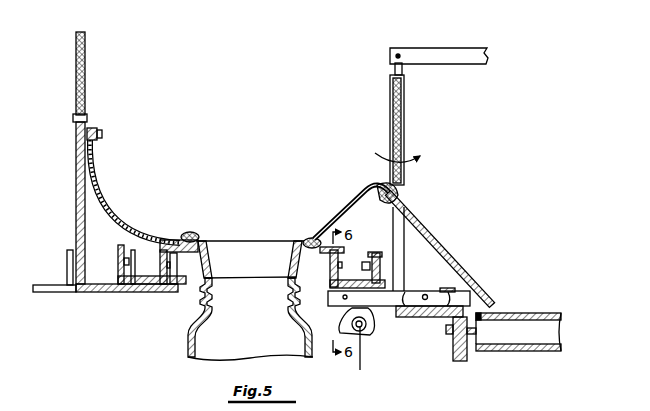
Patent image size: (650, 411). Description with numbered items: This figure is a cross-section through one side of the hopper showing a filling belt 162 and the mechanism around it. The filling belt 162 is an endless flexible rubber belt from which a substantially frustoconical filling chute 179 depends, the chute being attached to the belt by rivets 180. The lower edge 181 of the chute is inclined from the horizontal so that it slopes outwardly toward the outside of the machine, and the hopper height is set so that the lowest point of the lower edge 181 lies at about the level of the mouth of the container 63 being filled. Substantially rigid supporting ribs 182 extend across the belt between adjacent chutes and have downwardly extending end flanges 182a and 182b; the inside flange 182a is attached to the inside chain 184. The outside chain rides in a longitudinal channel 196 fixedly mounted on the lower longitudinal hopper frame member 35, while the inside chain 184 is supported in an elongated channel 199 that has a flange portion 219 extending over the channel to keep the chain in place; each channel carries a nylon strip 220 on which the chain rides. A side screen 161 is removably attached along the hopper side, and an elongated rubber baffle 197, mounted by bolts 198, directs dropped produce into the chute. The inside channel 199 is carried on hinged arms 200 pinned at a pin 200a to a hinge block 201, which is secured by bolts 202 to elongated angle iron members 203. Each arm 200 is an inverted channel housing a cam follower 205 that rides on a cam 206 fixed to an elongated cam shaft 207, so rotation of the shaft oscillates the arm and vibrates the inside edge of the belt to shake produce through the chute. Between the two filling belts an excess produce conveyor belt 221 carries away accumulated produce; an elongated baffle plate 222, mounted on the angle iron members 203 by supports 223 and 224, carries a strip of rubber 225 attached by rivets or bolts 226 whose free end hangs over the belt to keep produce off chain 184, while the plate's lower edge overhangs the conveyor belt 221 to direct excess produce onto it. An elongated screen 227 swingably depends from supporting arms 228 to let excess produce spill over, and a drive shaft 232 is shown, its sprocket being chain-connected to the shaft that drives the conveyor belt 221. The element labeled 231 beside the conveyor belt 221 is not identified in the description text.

The side screen 161 is at (76, 52).
The lower longitudinal hopper frame member 35 is at (76, 148).
The bolts 198 is at (97, 133).
The elongated rubber baffle 197 is at (103, 176).
The filling belt 162 is at (165, 243).
The supporting ribs 182 is at (162, 248).
The end flange 182b is at (163, 286).
The end flange 182a is at (345, 256).
The longitudinal channel 196 is at (118, 270).
The nylon strip 220 is at (136, 285).
The rivets 180 is at (193, 234).
The filling chute 179 is at (224, 247).
The lower edge 181 is at (220, 278).
The container 63 is at (258, 329).
The strip of rubber 225 is at (342, 206).
The rivets or bolts 226 is at (391, 195).
The elongated screen 227 is at (403, 110).
The supporting arms 228 is at (443, 50).
The flange portion 219 is at (388, 255).
The baffle plate 222 is at (400, 263).
The inside chain 184 is at (396, 266).
The elongated channel 199 is at (446, 266).
The support 224 is at (398, 269).
The bolts 202 is at (450, 291).
The hinge block 201 is at (452, 301).
The excess produce conveyor belt 221 is at (560, 314).
The tube 231 is at (540, 331).
The cam follower 205 is at (372, 306).
The cam 206 is at (364, 337).
The cam shaft 207 is at (368, 358).
The hinged arm 200 is at (400, 306).
The drive shaft 232 is at (462, 328).
The elongated angle iron members 203 is at (460, 356).
The pin 200a is at (476, 332).
The support 223 is at (163, 405).